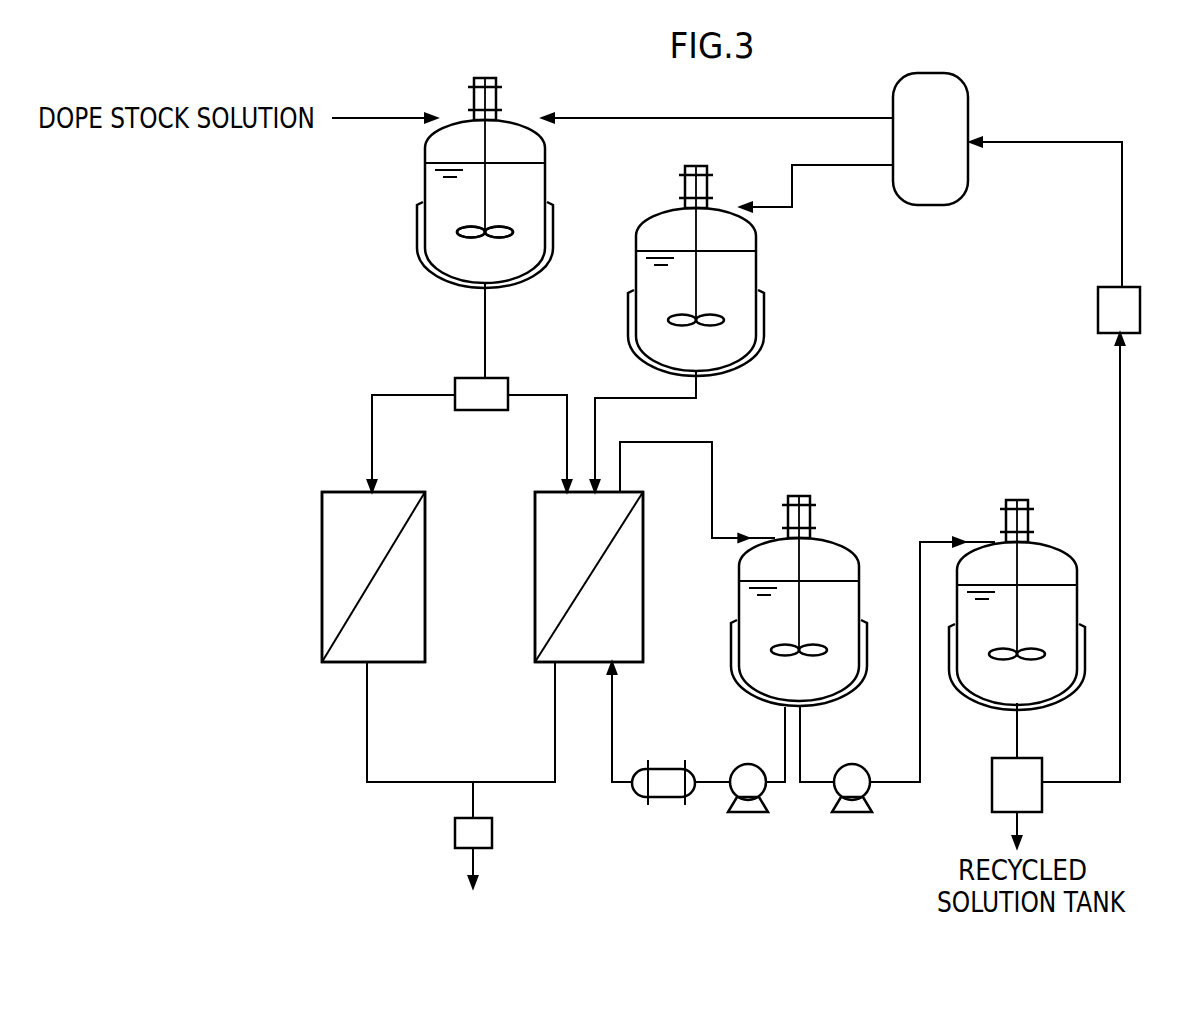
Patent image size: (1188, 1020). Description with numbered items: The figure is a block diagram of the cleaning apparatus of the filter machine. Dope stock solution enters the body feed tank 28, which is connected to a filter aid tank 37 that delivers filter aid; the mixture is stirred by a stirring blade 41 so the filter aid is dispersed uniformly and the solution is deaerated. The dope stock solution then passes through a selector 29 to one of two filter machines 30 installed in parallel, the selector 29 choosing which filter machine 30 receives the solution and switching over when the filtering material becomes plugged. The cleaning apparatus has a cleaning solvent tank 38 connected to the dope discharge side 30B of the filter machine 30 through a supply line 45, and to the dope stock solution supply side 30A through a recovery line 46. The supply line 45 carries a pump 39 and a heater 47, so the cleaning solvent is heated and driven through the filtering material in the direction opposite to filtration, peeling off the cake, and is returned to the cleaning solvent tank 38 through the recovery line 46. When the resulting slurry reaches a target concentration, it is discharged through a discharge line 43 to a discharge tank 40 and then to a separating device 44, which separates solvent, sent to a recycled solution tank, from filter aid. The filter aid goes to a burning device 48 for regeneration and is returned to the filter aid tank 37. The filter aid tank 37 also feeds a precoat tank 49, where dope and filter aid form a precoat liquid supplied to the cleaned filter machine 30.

The body feed tank 28 is at (427, 177).
The stirring blade 41 is at (503, 224).
The selector 29 is at (470, 386).
The filter machine 30 is at (397, 492).
The dope stock solution supply side 30A is at (550, 492).
The dope discharge side 30B is at (547, 665).
The filter aid tank 37 is at (968, 98).
The precoat tank 49 is at (757, 269).
The burning device 48 is at (1098, 315).
The recovery line 46 is at (712, 468).
The cleaning solvent tank 38 is at (739, 615).
The discharge line 43 is at (945, 541).
The discharge tank 40 is at (1060, 545).
The supply line 45 is at (710, 781).
The heater 47 is at (660, 805).
The pump 39 is at (745, 812).
The separating device 44 is at (992, 781).